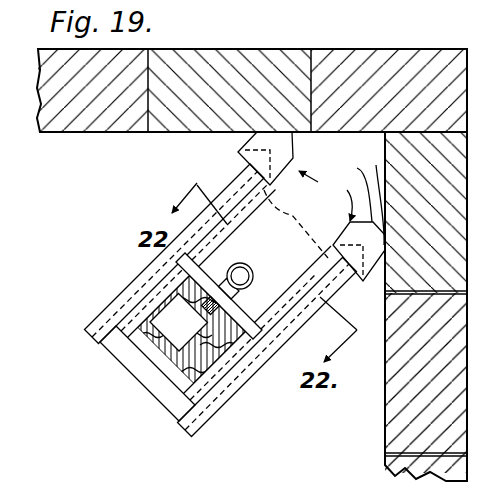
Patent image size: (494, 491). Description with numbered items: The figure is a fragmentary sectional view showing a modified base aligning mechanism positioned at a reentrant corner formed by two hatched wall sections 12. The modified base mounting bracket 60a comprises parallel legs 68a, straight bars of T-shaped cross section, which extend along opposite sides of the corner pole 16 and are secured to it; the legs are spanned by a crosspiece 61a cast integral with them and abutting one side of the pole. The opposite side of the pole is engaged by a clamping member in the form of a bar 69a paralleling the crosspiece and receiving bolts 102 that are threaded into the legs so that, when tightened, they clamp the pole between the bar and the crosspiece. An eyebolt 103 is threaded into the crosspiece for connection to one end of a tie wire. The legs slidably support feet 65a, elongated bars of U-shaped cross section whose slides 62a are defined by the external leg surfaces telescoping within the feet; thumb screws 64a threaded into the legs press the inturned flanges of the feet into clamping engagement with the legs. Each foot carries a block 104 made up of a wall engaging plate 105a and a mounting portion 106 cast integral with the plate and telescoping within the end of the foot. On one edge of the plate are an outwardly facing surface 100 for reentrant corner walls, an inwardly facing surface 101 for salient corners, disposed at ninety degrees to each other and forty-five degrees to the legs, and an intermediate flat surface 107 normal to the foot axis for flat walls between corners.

The wall 12 is at (258, 88).
The outwardly facing wall engaging surface 100 is at (238, 152).
The inwardly facing wall engaging surface 101 is at (302, 152).
The bolts 102 is at (100, 338).
The eyebolt 103 is at (245, 267).
The block 104 is at (302, 165).
The wall engaging plate 105a is at (293, 180).
The mounting portion 106 is at (290, 208).
The flat surface 107 is at (300, 143).
The corner pole 16 is at (178, 380).
The base mounting bracket 60a is at (240, 389).
The crosspiece 61a is at (258, 280).
The slides 62a is at (251, 366).
The thumb screws 64a is at (262, 318).
The feet 65a is at (282, 330).
The legs 68a is at (238, 380).
The clamping bar 69a is at (152, 357).